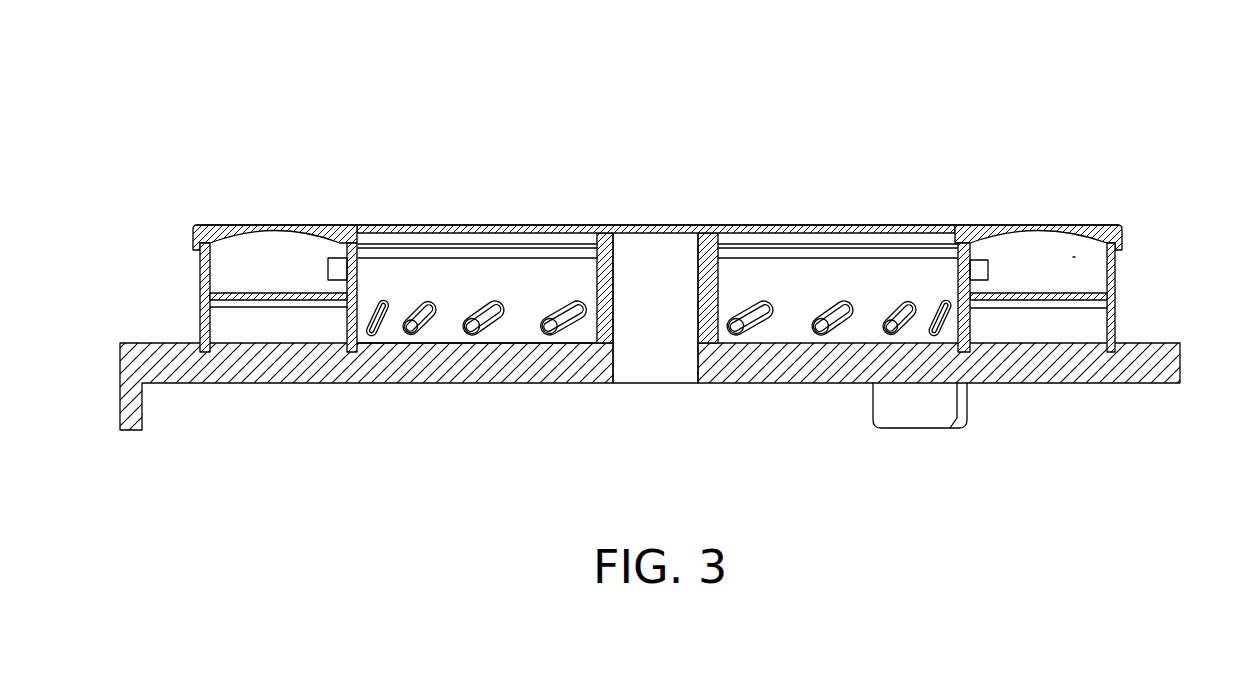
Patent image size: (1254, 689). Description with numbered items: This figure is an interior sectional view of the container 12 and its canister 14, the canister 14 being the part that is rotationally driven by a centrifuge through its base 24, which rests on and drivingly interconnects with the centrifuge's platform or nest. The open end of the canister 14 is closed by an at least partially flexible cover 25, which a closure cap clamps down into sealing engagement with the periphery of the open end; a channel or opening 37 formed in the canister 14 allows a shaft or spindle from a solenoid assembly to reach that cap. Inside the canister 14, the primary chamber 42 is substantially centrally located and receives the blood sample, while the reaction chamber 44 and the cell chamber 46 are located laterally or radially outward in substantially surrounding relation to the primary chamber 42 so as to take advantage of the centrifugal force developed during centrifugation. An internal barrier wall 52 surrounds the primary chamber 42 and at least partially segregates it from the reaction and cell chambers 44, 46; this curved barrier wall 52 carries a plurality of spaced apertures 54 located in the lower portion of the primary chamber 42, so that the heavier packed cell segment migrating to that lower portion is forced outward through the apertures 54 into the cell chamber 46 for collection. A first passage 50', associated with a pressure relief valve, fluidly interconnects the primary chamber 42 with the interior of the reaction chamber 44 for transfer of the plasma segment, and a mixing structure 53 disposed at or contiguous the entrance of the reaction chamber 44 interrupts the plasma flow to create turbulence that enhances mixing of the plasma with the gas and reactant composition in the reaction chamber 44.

The container 12 is at (722, 143).
The canister 14 is at (1115, 263).
The base 24 is at (258, 393).
The cover 25 is at (233, 227).
The channel or opening 37 is at (657, 357).
The primary chamber 42 is at (514, 280).
The reaction chamber 44 is at (228, 273).
The cell chamber 46 is at (230, 330).
The first passage 50' is at (1003, 243).
The internal barrier wall 52 is at (520, 333).
The mixing structure 53 is at (330, 270).
The apertures 54 is at (468, 334).